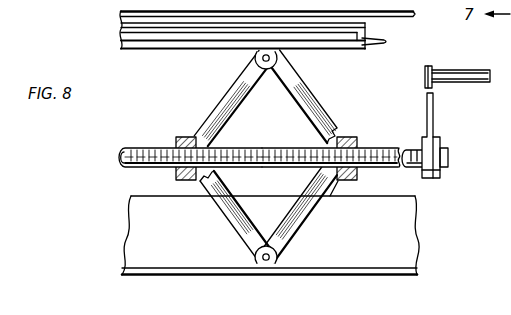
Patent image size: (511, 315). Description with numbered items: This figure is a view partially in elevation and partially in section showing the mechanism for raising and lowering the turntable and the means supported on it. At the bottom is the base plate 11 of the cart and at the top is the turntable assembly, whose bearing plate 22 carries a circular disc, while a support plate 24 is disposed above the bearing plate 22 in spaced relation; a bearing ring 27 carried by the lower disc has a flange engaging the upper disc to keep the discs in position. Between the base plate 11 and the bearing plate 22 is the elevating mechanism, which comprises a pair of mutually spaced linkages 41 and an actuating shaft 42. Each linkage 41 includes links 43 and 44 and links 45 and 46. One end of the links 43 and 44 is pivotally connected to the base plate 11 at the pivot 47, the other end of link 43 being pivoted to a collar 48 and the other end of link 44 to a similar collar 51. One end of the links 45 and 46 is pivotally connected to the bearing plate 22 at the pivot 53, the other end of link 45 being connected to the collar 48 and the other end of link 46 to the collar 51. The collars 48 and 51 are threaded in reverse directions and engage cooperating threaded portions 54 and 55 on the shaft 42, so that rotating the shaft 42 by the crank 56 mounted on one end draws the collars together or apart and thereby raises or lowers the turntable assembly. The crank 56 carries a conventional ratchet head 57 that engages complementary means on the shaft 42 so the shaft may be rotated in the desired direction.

The base plate 11 is at (387, 268).
The bearing plate 22 is at (366, 50).
The support plate 24 is at (399, 19).
The bearing ring 27 is at (386, 43).
The linkage 41 is at (270, 182).
The actuating shaft 42 is at (449, 155).
The link 43 is at (222, 213).
The link 44 is at (320, 207).
The link 45 is at (218, 105).
The link 46 is at (316, 105).
The pivotal connection 47 is at (267, 263).
The collar 48 is at (177, 181).
The collar 51 is at (357, 181).
The pivotal connection 53 is at (271, 58).
The threaded portion 54 is at (138, 147).
The threaded portion 55 is at (365, 148).
The crank 56 is at (473, 85).
The ratchet head 57 is at (430, 179).